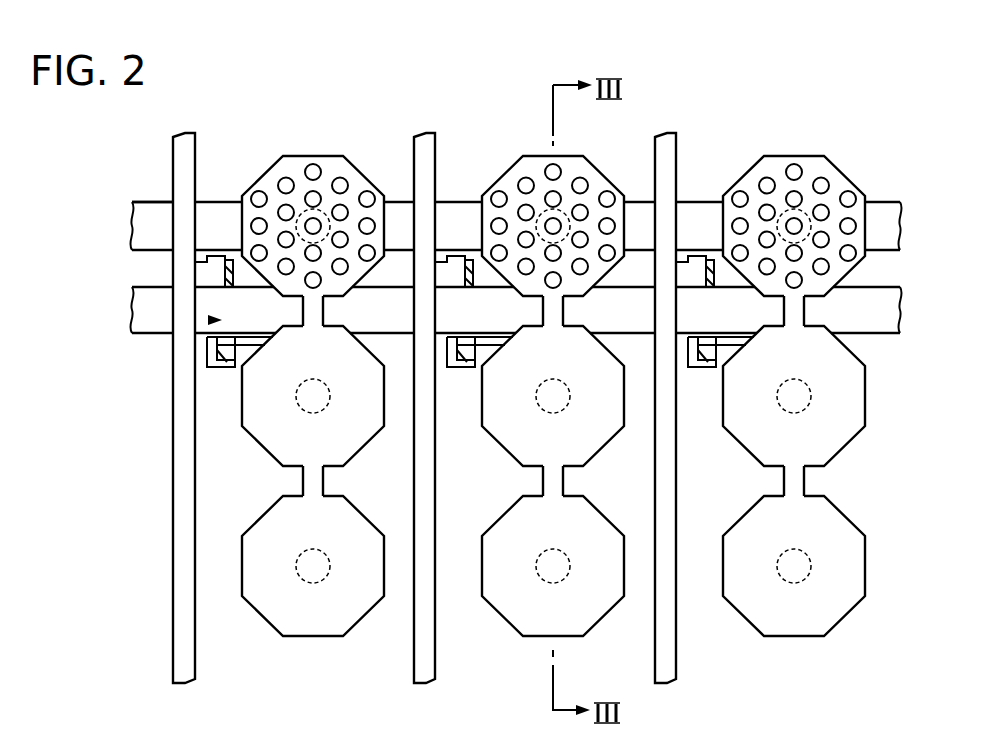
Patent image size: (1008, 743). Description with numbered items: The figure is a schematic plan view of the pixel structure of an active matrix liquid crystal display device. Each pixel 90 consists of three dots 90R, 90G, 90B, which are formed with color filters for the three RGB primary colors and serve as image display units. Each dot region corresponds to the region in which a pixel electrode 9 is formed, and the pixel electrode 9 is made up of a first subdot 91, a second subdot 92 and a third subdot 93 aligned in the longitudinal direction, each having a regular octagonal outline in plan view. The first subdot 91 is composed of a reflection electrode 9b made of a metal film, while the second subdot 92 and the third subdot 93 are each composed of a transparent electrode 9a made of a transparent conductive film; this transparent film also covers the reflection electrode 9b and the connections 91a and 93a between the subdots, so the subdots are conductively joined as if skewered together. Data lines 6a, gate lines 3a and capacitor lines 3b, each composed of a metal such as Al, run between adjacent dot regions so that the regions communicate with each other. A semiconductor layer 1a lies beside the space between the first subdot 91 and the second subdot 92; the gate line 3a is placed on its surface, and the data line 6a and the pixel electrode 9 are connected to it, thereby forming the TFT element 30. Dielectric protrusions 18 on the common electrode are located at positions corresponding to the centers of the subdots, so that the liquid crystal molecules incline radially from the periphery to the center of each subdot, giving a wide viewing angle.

The pixel 90 is at (239, 69).
The pixel electrode 9 is at (310, 389).
The red dot 90R is at (324, 183).
The green dot 90G is at (630, 132).
The blue dot 90B is at (824, 134).
The reflection electrode 9b is at (308, 187).
The first subdot 91 is at (346, 182).
The data line 6a is at (173, 164).
The capacitor line 3b is at (132, 210).
The gate line 3a is at (132, 295).
The TFT element 30 is at (210, 320).
The semiconductor layer 1a is at (222, 367).
The connection 91a is at (324, 309).
The second subdot 92 is at (256, 441).
The connection 93a is at (324, 478).
The transparent electrode 9a is at (310, 513).
The protrusion 18 is at (300, 582).
The third subdot 93 is at (313, 598).